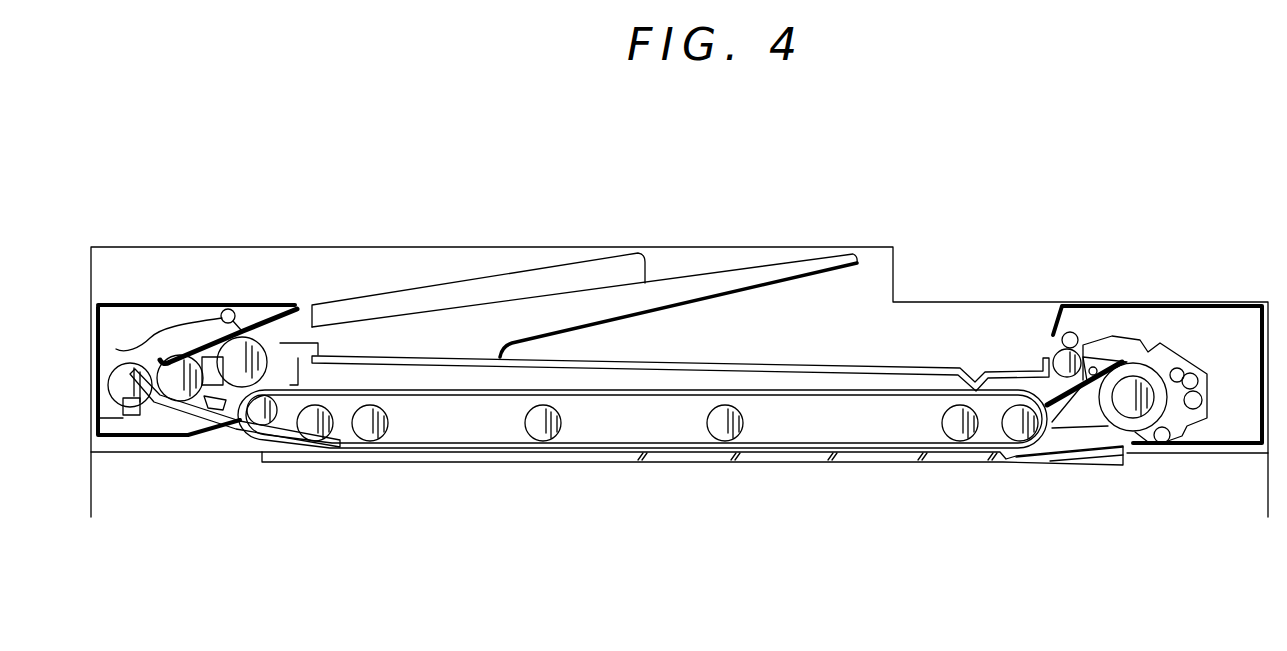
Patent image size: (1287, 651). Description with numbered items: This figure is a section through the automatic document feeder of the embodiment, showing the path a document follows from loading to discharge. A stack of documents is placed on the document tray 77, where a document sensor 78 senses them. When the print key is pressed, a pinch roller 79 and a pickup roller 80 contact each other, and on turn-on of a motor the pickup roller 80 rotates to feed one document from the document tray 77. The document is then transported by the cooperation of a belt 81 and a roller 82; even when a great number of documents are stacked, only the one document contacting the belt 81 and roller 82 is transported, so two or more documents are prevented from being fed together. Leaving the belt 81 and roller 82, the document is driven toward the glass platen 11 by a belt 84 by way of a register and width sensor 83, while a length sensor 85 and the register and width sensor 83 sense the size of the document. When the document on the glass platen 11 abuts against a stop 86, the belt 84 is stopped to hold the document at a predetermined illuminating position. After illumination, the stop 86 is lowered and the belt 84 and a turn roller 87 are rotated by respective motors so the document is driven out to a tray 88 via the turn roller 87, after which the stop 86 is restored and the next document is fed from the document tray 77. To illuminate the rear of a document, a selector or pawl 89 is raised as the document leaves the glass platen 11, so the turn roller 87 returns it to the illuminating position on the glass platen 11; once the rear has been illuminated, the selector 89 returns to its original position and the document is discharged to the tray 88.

The glass platen 11 is at (777, 463).
The document tray 77 is at (616, 266).
The document sensor 78 is at (244, 338).
The pinch roller 79 is at (229, 309).
The pickup roller 80 is at (289, 432).
The belt 81 is at (163, 337).
The roller 82 is at (167, 420).
The register and width sensor 83 is at (207, 420).
The belt 84 is at (590, 403).
The length sensor 85 is at (128, 427).
The stop 86 is at (1040, 463).
The turn roller 87 is at (1148, 378).
The tray 88 is at (944, 366).
The selector or pawl 89 is at (1113, 377).